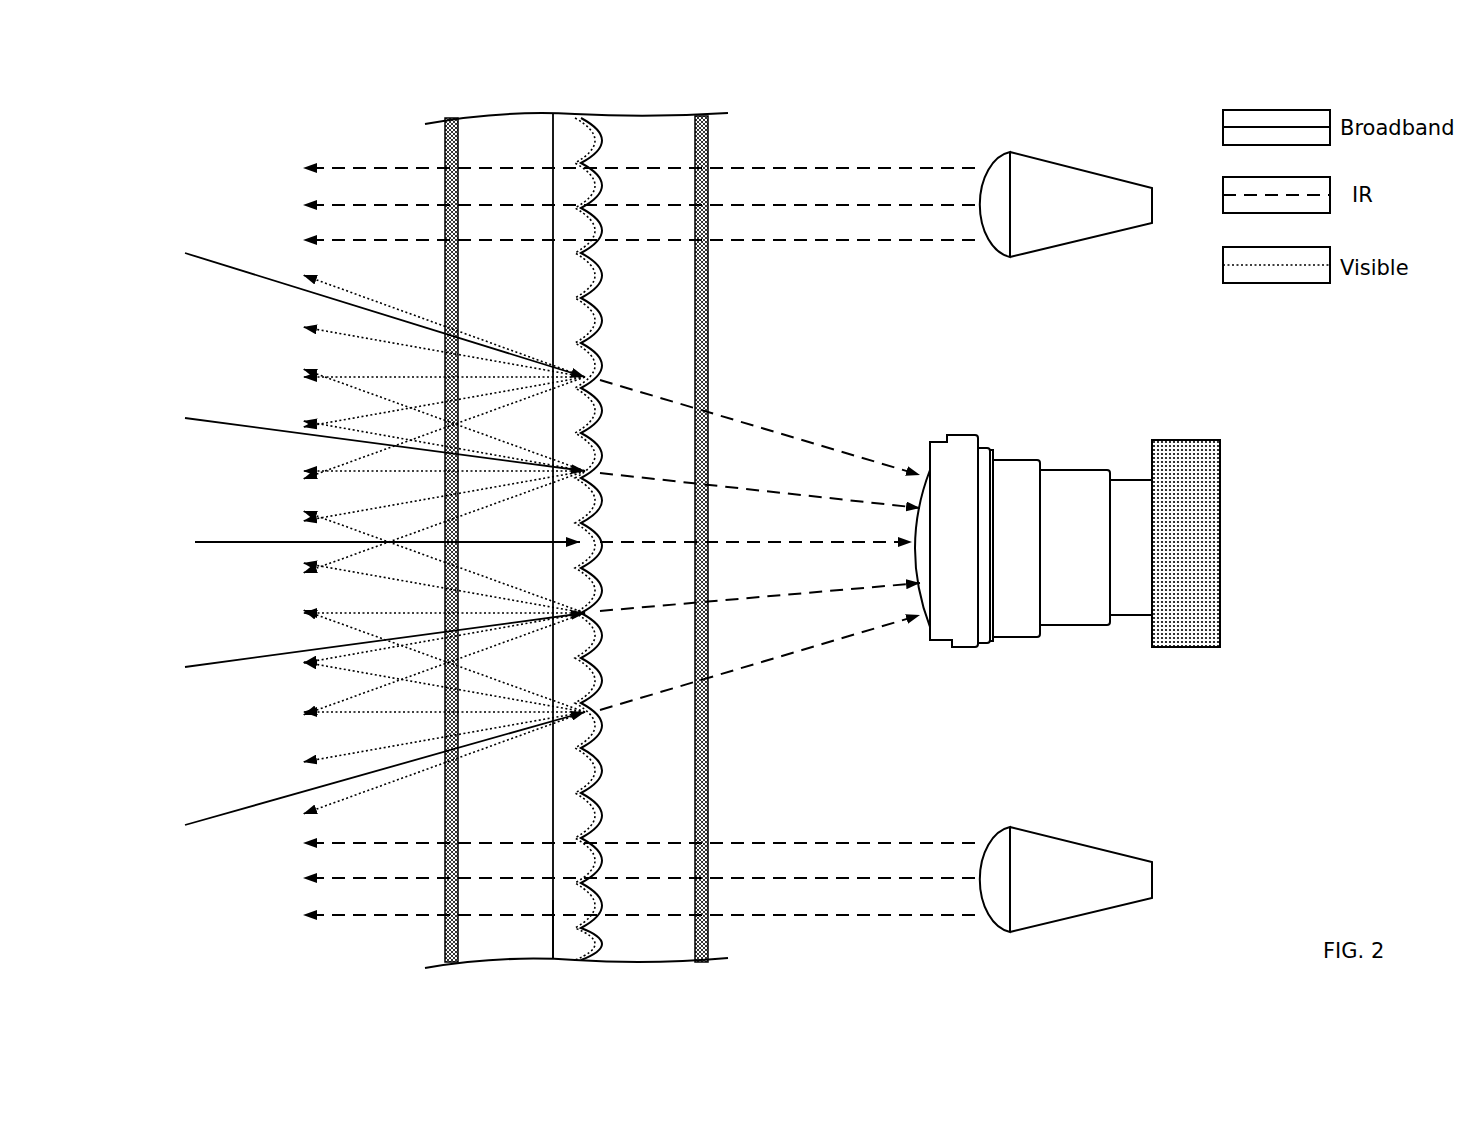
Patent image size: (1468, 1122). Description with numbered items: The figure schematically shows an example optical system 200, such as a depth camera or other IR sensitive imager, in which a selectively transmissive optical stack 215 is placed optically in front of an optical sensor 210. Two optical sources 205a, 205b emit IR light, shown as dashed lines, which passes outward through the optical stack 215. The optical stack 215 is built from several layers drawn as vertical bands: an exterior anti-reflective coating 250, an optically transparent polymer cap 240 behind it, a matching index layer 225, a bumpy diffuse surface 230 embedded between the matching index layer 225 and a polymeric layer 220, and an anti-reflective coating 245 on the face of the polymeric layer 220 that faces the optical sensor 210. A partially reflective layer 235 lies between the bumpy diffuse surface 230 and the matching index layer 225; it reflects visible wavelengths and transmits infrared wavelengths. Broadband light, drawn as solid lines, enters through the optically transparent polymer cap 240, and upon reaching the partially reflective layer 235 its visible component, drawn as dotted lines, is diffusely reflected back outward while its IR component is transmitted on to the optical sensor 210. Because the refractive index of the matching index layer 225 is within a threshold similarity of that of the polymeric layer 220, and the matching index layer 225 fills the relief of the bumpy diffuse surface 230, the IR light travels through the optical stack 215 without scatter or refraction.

The optical system 200 is at (166, 97).
The optical stack 215 is at (442, 97).
The partially reflective layer 235 is at (577, 141).
The bumpy diffuse surface 230 is at (606, 141).
The optically transparent polymer cap 240 is at (519, 536).
The polymeric layer 220 is at (655, 597).
The anti-reflective coating 250 is at (445, 932).
The anti-reflective coating 245 is at (708, 932).
The matching index layer 225 is at (568, 947).
The optical source 205a is at (1066, 204).
The optical source 205b is at (1066, 879).
The optical sensor 210 is at (1068, 421).